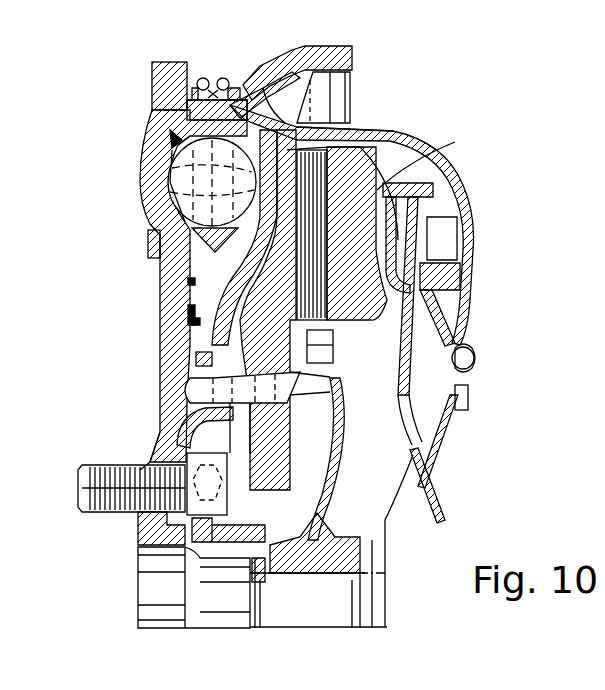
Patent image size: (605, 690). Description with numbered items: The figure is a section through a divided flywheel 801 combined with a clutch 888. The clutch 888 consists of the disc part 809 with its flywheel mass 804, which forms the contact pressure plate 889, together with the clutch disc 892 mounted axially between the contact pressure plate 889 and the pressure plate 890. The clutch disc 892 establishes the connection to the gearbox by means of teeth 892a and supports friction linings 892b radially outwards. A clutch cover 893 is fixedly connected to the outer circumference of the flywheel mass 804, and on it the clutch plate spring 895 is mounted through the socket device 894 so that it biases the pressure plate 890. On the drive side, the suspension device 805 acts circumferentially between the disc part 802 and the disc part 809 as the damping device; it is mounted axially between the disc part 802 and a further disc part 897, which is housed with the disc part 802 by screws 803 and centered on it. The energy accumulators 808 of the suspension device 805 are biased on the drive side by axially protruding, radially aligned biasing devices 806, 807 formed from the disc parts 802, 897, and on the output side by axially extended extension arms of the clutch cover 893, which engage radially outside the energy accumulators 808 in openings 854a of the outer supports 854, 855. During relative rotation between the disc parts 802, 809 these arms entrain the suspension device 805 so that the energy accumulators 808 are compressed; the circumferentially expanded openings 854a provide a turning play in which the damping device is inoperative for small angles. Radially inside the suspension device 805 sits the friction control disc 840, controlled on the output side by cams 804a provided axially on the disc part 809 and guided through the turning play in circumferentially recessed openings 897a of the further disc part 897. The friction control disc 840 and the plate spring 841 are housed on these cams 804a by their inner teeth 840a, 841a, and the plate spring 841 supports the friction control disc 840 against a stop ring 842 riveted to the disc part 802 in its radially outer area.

The divided flywheel 801 is at (505, 146).
The disc part 802 is at (180, 273).
The screws 803 is at (83, 507).
The flywheel mass 804 is at (263, 77).
The cams 804a is at (318, 430).
The suspension device 805 is at (173, 135).
The biasing device 806 is at (167, 147).
The biasing device 807 is at (183, 175).
The energy accumulators 808 is at (145, 210).
The disc part 809 is at (290, 372).
The friction control disc 840 is at (200, 380).
The inner teeth 840a is at (147, 407).
The plate spring 841 is at (197, 353).
The inner teeth 841a is at (147, 433).
The stop ring 842 is at (190, 320).
The outer support 854 is at (231, 88).
The openings 854a is at (157, 103).
The outer support 855 is at (200, 78).
The clutch 888 is at (425, 121).
The contact pressure plate 889 is at (347, 112).
The pressure plate 890 is at (360, 170).
The clutch disc 892 is at (322, 410).
The teeth 892a is at (305, 573).
The friction linings 892b is at (347, 320).
The clutch cover 893 is at (150, 68).
The socket device 894 is at (463, 273).
The clutch plate spring 895 is at (407, 393).
The further disc part 897 is at (187, 255).
The openings 897a is at (197, 363).